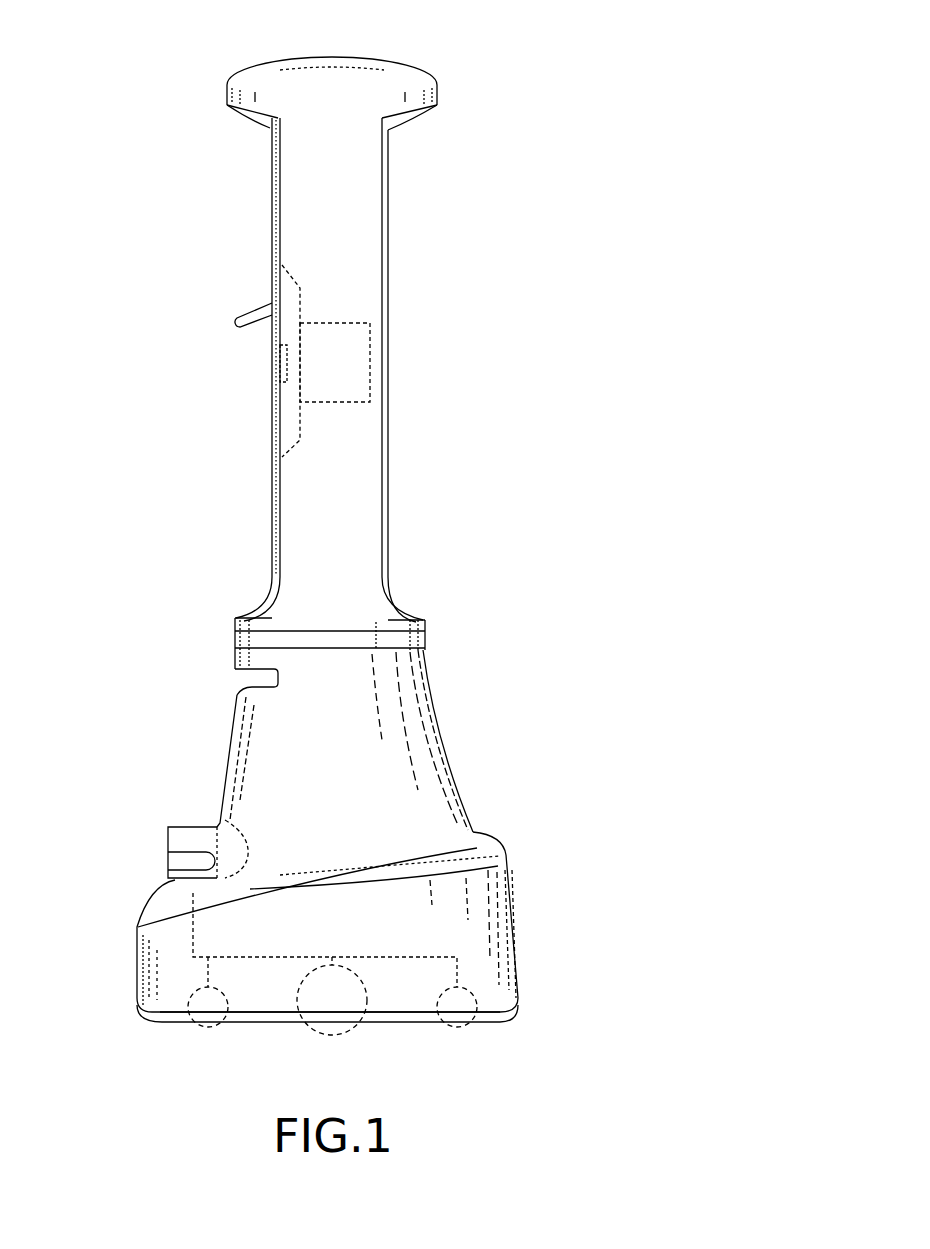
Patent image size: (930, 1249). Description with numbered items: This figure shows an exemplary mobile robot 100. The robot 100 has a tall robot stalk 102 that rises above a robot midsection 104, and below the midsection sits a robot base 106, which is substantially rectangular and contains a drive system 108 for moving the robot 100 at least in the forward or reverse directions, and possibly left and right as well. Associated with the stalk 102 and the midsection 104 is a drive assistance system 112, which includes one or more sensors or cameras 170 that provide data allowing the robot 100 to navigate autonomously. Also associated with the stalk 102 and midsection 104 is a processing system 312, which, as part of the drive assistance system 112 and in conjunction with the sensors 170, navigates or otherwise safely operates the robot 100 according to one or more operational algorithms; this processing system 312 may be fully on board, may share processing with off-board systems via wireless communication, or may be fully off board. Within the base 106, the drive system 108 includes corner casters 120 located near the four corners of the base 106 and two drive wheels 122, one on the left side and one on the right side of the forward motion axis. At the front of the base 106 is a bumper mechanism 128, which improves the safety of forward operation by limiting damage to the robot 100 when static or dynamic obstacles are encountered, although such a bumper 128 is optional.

The robot 100 is at (542, 38).
The robot stalk 102 is at (383, 277).
The robot midsection 104 is at (425, 640).
The robot base 106 is at (505, 917).
The drive system 108 is at (123, 958).
The drive assistance system 112 is at (287, 276).
The corner casters 120 is at (477, 1030).
The drive wheels 122 is at (343, 1030).
The bumper mechanism 128 is at (165, 945).
The sensors 170 is at (233, 323).
The processing system 312 is at (370, 363).